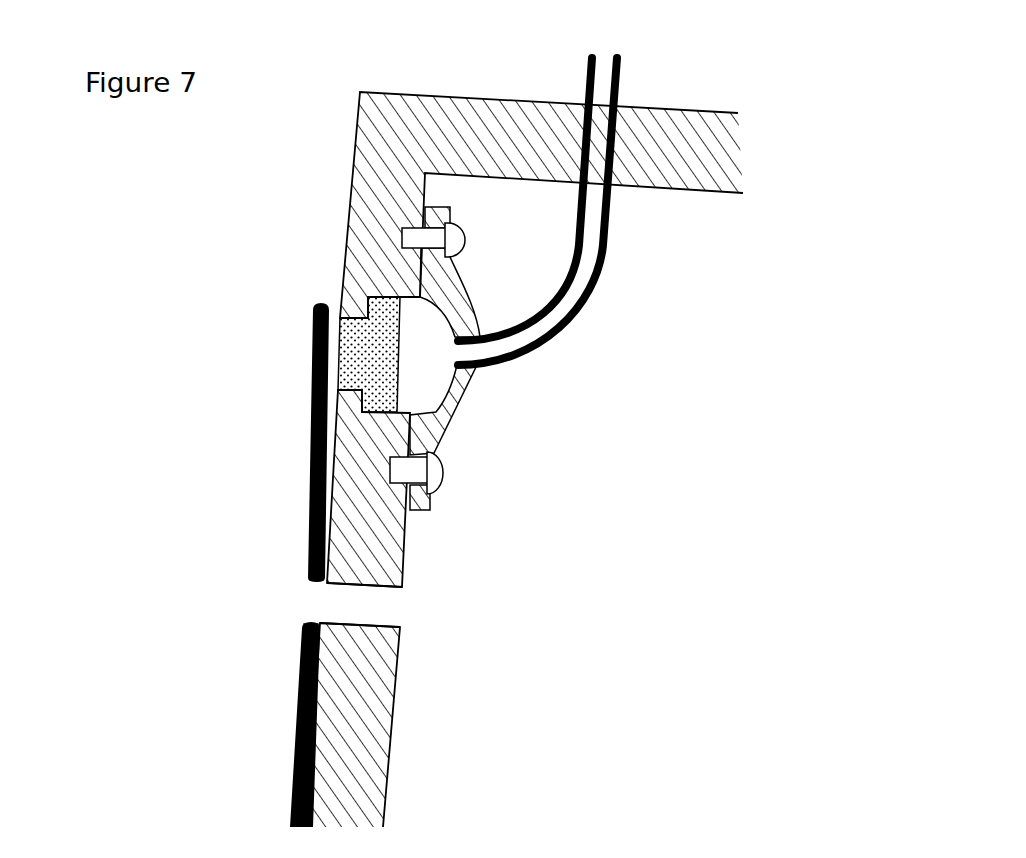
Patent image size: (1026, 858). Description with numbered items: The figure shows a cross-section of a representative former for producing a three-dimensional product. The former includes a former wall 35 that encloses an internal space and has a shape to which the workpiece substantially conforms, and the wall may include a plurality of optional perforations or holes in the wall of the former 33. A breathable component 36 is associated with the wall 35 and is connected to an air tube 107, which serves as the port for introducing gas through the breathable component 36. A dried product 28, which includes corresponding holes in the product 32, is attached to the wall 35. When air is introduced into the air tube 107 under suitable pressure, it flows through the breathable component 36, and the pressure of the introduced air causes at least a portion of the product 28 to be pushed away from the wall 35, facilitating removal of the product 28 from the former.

The product 28 is at (311, 343).
The holes in the product 32 is at (310, 598).
The holes in the wall of the former 33 is at (387, 602).
The former wall 35 is at (380, 765).
The breathable component 36 is at (337, 317).
The air tube 107 is at (590, 257).